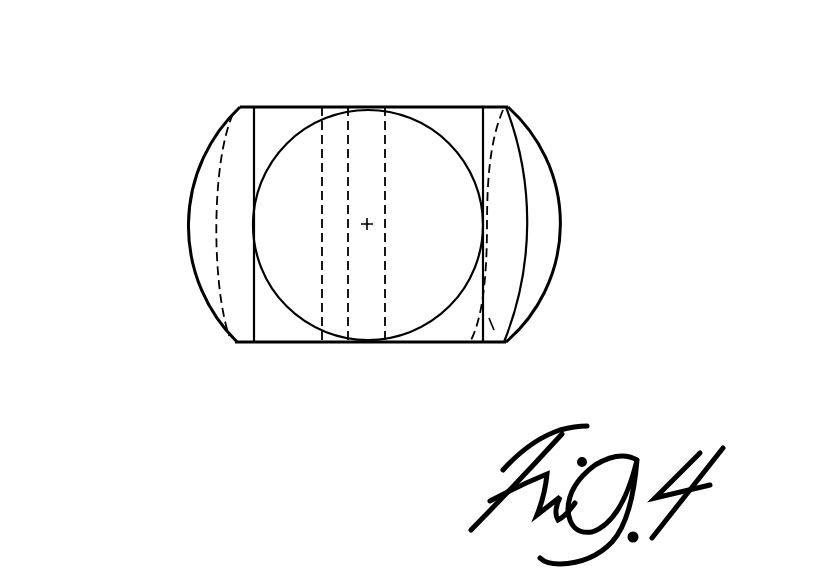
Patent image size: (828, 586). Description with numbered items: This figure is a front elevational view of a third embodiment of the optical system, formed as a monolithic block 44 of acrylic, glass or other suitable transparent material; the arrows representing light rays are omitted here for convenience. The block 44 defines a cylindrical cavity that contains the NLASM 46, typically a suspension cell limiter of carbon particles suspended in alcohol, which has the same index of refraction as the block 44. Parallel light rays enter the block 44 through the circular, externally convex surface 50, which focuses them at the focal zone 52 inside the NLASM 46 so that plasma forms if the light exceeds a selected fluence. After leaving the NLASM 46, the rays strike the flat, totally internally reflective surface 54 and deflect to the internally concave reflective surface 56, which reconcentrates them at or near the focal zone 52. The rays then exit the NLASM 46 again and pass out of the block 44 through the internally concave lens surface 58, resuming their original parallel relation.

The monolithic block 44 is at (512, 70).
The NLASM 46 is at (437, 78).
The circular, externally convex surface 50 is at (420, 416).
The focal zone 52 is at (416, 262).
The flat, totally internally reflective surface 54 is at (304, 124).
The internally concave reflective surface 56 is at (466, 378).
The internally concave lens surface 58 is at (197, 179).